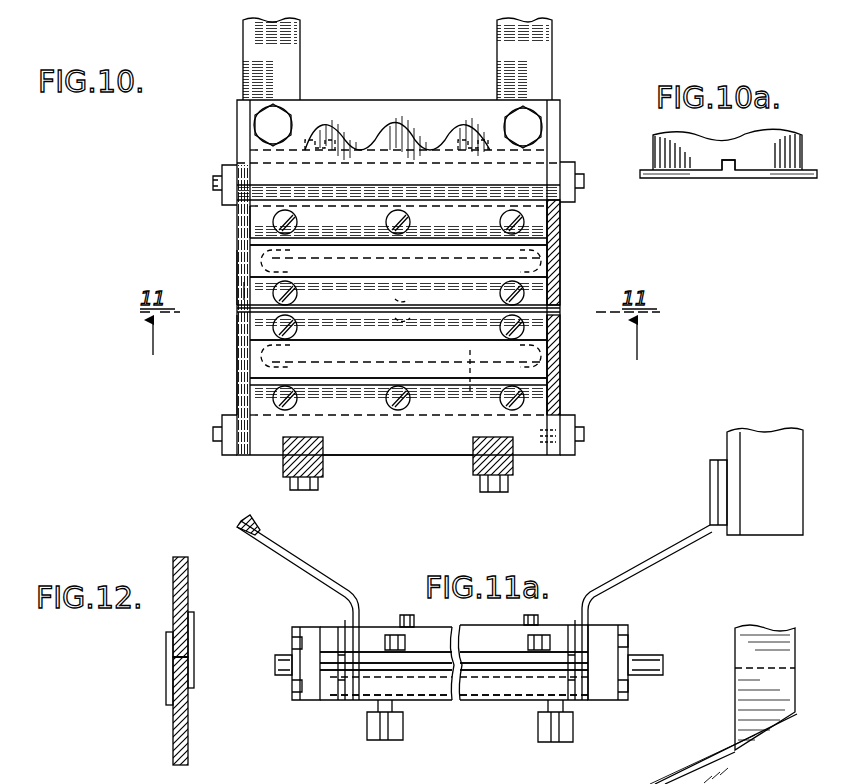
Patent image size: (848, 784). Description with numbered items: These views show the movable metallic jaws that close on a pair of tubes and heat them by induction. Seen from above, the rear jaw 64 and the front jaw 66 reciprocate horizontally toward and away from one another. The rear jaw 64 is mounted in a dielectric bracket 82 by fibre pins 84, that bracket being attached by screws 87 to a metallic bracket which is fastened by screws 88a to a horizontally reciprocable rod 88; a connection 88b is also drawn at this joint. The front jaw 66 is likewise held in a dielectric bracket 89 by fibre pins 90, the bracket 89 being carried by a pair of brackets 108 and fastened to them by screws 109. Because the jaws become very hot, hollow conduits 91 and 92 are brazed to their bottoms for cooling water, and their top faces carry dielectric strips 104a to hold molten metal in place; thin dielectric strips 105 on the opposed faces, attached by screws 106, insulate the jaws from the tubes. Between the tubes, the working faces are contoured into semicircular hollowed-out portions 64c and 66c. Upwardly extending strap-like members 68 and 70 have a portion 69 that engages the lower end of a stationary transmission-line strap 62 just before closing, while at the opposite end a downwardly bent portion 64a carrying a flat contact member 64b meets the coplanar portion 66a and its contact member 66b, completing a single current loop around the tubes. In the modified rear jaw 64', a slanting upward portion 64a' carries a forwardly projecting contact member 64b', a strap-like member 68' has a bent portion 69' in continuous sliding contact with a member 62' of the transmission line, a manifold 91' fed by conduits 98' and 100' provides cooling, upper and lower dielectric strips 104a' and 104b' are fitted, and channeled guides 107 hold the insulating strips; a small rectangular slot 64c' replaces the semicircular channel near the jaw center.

In FIG. 10, the horizontally reciprocable rod 88 is at (252, 72).
In FIG. 10, the screws 88a is at (270, 125).
In FIG. 10, the spring connection 88b is at (428, 105).
In FIG. 10, the screws 87 is at (318, 135).
In FIG. 10, the screws 106 is at (213, 190).
In FIG. 10, the dielectric bracket 82 is at (250, 212).
In FIG. 10, the fibre pins 84 is at (295, 222).
In FIG. 10, the conduit 91 is at (429, 238).
In FIG. 10, the strap-like member 68 is at (578, 252).
In FIG. 10, the rear jaw 64 is at (361, 246).
In FIG. 10a, the rear jaw 64 is at (728, 172).
In FIG. 10, the bent portion 64a is at (210, 277).
In FIG. 12, the bent portion 64a is at (207, 607).
In FIG. 12, the flat contact member 64b is at (217, 650).
In FIG. 10, the hollowed-out portion 64c is at (425, 294).
In FIG. 10, the dielectric strip 104a is at (398, 332).
In FIG. 10, the dielectric strips 105 is at (562, 272).
In FIG. 10, the front jaw 66 is at (258, 360).
In FIG. 10, the bent portion 66a is at (236, 393).
In FIG. 12, the bent portion 66a is at (185, 728).
In FIG. 12, the flat contact member 66b is at (166, 685).
In FIG. 10, the hollowed-out portion 66c is at (402, 318).
In FIG. 10, the fibre pins 90 is at (297, 398).
In FIG. 10, the conduit 92 is at (468, 388).
In FIG. 10, the strap-like member 70 is at (562, 394).
In FIG. 10, the brackets 108 is at (290, 466).
In FIG. 10, the screws 109 is at (310, 492).
In FIG. 10, the dielectric bracket 89 is at (398, 458).
In FIG. 10a, the slot 64c' is at (701, 188).
In FIG. 11a, the bent strap-like portion 64a' is at (298, 610).
In FIG. 11a, the flat contact member 64b' is at (220, 526).
In FIG. 11a, the rear jaw 64' is at (454, 620).
In FIG. 11a, the upper dielectric strip 104a' is at (458, 613).
In FIG. 11a, the channeled guides 107 is at (338, 690).
In FIG. 11a, the lower dielectric strip 104b' is at (444, 716).
In FIG. 11a, the conduit 98' is at (406, 722).
In FIG. 11a, the manifold 91' is at (459, 719).
In FIG. 11a, the conduit 100' is at (581, 728).
In FIG. 11a, the member 62' is at (754, 474).
In FIG. 11a, the bent portion 69' is at (696, 492).
In FIG. 11a, the strap-like member 68' is at (647, 612).
In FIG. 11a, the strap-like member 62 is at (743, 682).
In FIG. 11a, the portion 69 is at (726, 744).